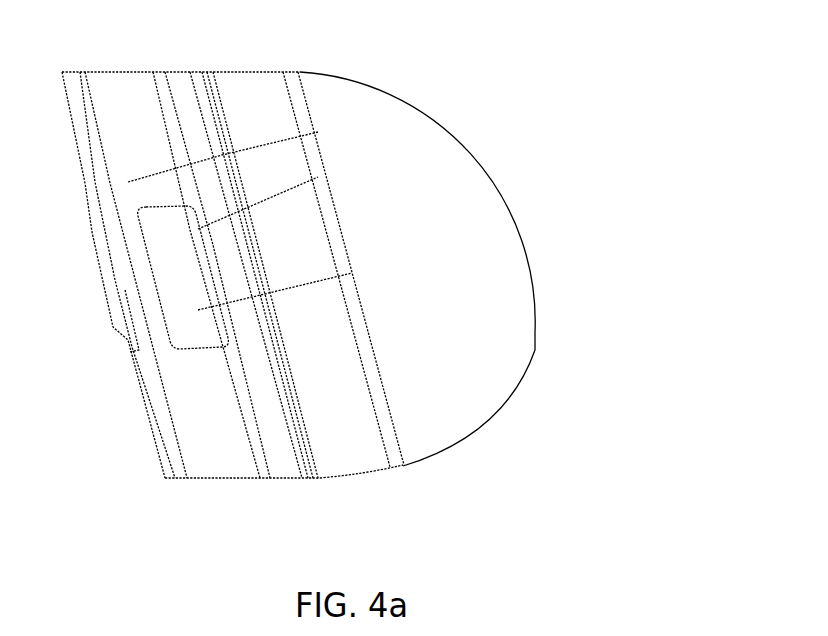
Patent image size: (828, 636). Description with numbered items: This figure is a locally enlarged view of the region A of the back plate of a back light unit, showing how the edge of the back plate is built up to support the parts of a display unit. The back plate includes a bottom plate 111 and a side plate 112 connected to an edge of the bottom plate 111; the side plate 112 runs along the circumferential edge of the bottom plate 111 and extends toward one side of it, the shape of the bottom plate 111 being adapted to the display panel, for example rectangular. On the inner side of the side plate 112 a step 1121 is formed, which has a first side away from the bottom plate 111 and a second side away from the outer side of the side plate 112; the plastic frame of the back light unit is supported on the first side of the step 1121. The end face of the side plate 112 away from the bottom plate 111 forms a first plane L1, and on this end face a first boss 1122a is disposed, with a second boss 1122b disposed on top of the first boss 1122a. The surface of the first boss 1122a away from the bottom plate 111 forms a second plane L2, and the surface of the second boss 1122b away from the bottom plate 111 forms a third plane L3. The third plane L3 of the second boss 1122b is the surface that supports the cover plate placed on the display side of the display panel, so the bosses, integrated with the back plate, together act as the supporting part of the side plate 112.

The bottom plate 111 is at (412, 395).
The side plate 112 is at (218, 435).
The step 1121 is at (263, 398).
The first plane L1 is at (318, 132).
The second plane L2 is at (352, 273).
The third plane L3 is at (318, 177).
The first boss 1122a is at (453, 256).
The second boss 1122b is at (379, 222).
The locally enlarged region A is at (206, 14).